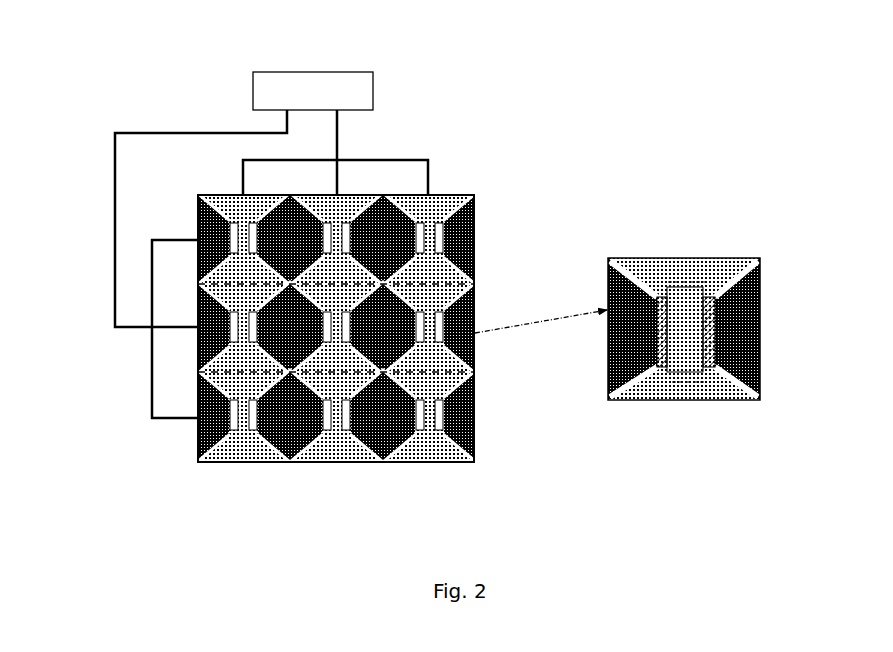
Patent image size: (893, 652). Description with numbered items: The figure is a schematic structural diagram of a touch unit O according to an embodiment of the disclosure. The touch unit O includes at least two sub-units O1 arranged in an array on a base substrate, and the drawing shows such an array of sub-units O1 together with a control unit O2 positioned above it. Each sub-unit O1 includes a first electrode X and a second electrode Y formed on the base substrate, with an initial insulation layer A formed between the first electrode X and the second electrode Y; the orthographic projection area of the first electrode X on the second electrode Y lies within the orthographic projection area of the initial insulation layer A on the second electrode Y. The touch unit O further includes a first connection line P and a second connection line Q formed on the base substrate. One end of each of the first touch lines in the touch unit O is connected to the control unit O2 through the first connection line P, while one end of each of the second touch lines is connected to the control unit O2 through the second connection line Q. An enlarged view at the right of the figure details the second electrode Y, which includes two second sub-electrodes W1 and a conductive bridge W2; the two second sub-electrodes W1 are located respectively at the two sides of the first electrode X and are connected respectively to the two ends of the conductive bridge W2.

The touch unit O is at (548, 69).
The sub-unit O1 is at (475, 248).
The control unit O2 is at (302, 72).
The first connection line P is at (113, 272).
The second connection line Q is at (339, 138).
The first electrode X is at (462, 420).
The second electrode Y is at (427, 458).
The initial insulation layer A is at (440, 430).
The second sub-electrode W1 is at (725, 257).
The conductive bridge W2 is at (692, 328).